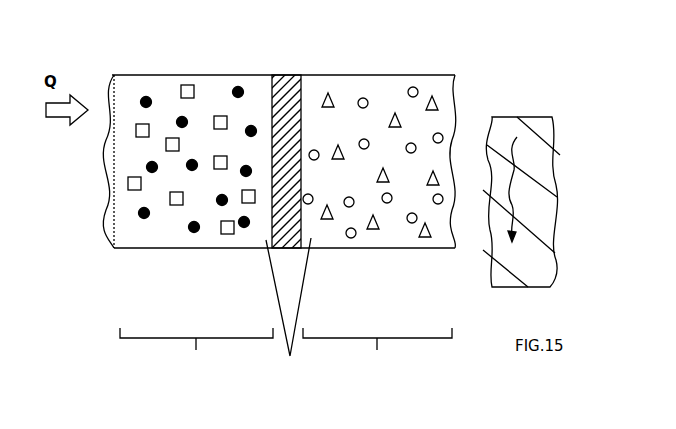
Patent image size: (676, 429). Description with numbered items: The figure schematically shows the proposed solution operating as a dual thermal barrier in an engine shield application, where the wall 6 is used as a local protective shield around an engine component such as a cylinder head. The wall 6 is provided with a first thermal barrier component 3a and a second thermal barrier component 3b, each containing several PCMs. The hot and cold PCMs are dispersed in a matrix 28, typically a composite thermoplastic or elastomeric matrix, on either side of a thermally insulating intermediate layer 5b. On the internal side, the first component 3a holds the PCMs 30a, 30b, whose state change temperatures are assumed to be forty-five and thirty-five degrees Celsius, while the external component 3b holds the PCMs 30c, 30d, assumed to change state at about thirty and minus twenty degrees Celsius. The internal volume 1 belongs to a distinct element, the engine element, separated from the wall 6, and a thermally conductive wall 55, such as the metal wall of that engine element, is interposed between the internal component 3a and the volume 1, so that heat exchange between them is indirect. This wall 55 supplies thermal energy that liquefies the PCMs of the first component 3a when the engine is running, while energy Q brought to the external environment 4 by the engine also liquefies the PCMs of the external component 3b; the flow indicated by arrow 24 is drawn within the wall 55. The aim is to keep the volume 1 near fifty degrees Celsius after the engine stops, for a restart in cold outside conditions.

The wall 6 is at (368, 69).
The thermally insulating intermediate layer 5b is at (281, 75).
The matrix 28 is at (288, 311).
The first thermal barrier component 3a is at (377, 354).
The second thermal barrier component 3b is at (196, 352).
The PCM 30a is at (433, 96).
The PCM 30b is at (442, 134).
The PCM 30c is at (149, 97).
The PCM 30d is at (190, 85).
The external environment 4 is at (79, 164).
The internal volume 1 is at (608, 151).
The thermally conductive wall 55 is at (545, 168).
The flow 24 is at (514, 201).